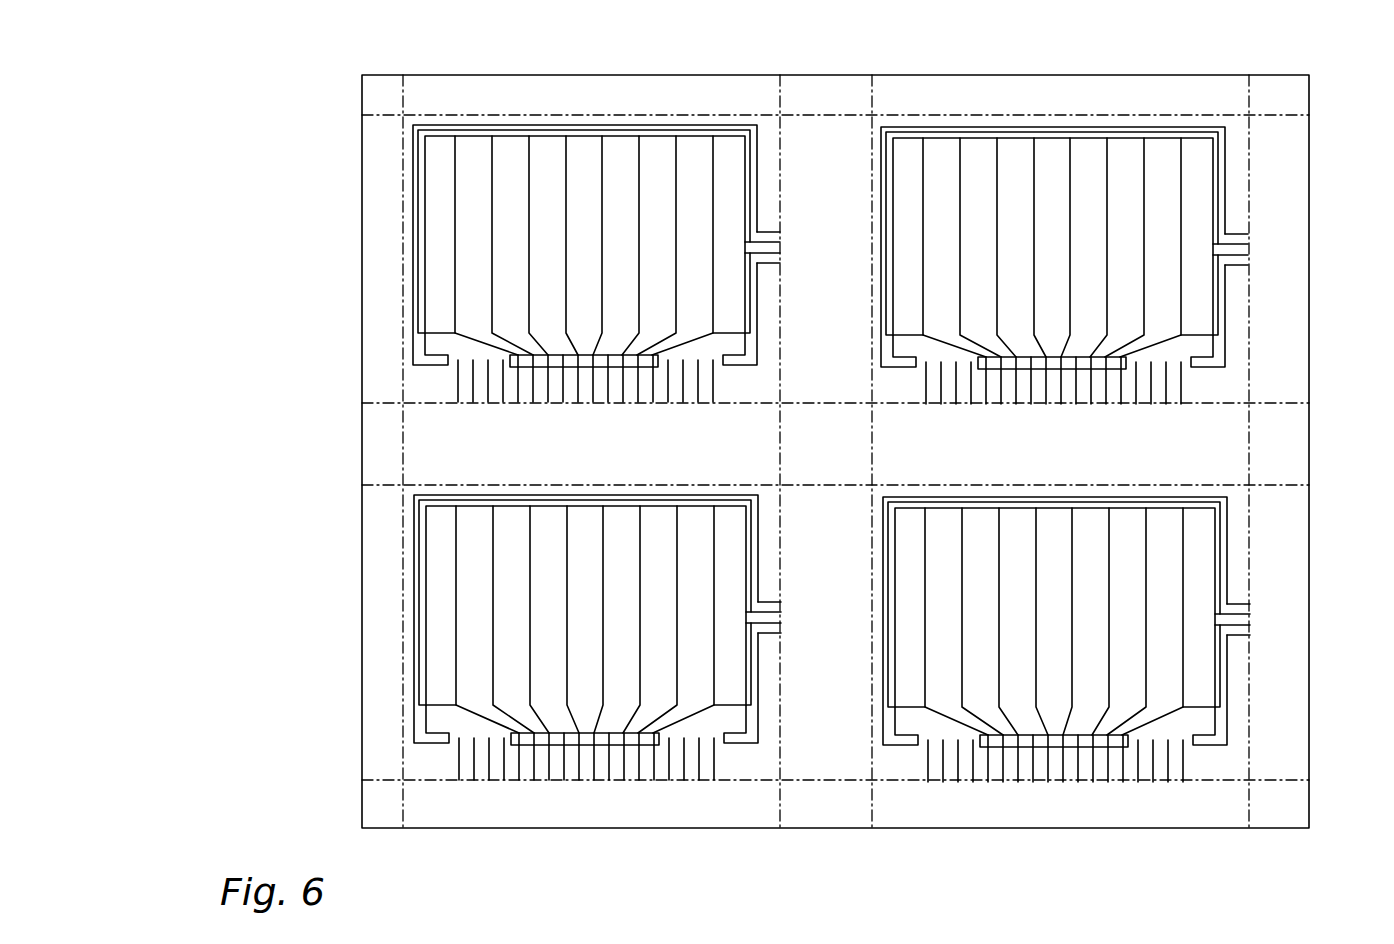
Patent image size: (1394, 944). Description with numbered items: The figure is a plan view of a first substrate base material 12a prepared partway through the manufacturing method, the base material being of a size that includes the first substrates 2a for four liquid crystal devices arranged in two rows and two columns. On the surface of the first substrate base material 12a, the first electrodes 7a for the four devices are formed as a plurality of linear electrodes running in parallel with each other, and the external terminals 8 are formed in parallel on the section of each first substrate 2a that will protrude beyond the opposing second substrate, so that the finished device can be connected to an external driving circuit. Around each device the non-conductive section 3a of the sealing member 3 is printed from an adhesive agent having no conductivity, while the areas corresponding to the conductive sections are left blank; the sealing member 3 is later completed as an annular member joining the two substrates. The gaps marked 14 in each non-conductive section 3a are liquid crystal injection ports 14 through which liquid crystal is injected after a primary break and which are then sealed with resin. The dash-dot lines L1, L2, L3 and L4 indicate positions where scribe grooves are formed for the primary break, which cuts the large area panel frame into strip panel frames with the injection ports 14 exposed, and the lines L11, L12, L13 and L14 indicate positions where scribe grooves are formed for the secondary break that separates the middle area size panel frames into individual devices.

The first substrate base material 12a is at (373, 89).
The first substrate 2a is at (765, 125).
The non-conductive section 3a is at (412, 240).
The sealing member 3 is at (756, 435).
The first electrodes 7a is at (605, 172).
The external terminals 8 is at (670, 385).
The liquid crystal injection ports 14 is at (772, 248).
The primary break position L1 is at (1254, 95).
The primary break position L2 is at (880, 92).
The primary break position L3 is at (792, 92).
The primary break position L4 is at (413, 92).
The secondary break position L11 is at (1287, 118).
The secondary break position L12 is at (1287, 406).
The secondary break position L13 is at (1287, 488).
The secondary break position L14 is at (1287, 783).